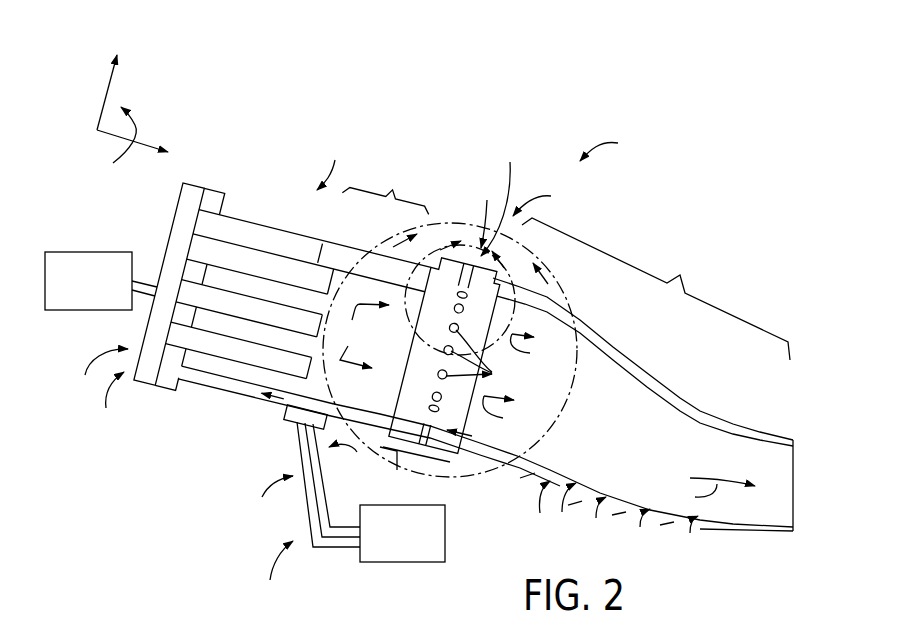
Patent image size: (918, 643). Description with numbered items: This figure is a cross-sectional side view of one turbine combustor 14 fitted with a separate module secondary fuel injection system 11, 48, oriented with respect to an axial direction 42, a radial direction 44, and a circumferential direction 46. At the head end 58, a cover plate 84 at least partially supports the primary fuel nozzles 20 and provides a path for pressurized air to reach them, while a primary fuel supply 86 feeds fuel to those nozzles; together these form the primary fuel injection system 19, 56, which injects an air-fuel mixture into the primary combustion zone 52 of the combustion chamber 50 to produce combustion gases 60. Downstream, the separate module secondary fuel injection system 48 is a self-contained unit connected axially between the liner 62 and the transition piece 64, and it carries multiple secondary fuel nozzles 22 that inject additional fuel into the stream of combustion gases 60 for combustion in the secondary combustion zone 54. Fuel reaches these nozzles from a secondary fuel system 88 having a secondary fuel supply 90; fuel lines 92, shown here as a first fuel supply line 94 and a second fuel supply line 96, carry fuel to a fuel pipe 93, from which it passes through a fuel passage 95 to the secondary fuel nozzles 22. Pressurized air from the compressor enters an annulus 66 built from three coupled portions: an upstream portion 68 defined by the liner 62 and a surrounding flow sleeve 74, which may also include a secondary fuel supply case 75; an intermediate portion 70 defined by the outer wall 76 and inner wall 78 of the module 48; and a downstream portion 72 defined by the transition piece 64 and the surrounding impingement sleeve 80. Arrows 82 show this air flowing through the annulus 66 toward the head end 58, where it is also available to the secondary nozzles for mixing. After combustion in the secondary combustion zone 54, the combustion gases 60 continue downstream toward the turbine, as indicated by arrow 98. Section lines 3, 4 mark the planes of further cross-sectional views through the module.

The section line 3- 3 is at (460, 284).
The section line 4- 4 is at (450, 342).
The separate module secondary fuel injection system 11 is at (545, 200).
The turbine combustor 14 is at (614, 147).
The primary fuel injection system 19 is at (111, 402).
The primary fuel nozzles 20 is at (228, 352).
The secondary fuel nozzles 22 is at (484, 359).
The axial direction 42 is at (112, 136).
The radial direction 44 is at (105, 93).
The circumferential direction 46 is at (136, 121).
The separate module secondary fuel injection system 48 is at (500, 196).
The combustion chamber 50 is at (485, 388).
The primary combustion zone 52 is at (405, 352).
The secondary combustion zone 54 is at (557, 402).
The primary fuel injection system 56 is at (101, 376).
The head end 58 is at (332, 159).
The combustion products 60 is at (449, 367).
The liner 62 is at (353, 398).
The transition piece 64 is at (545, 476).
The annulus 66 is at (445, 450).
The upstream portion 68 is at (312, 216).
The intermediate portion 70 is at (427, 460).
The downstream portion 72 is at (687, 284).
The flow sleeve 74 is at (355, 246).
The secondary fuel supply case 75 is at (402, 251).
The outer wall 76 is at (487, 211).
The inner wall 78 is at (447, 352).
The impingement sleeve 80 is at (598, 329).
The arrows 82 is at (609, 515).
The cover plate 84 is at (183, 204).
The primary fuel supply 86 is at (88, 252).
The secondary fuel system 88 is at (275, 574).
The secondary fuel supply 90 is at (394, 563).
The fuel lines 92 is at (310, 484).
The fuel pipe 93 is at (288, 408).
The first fuel supply line 94 is at (327, 556).
The fuel passage 95 is at (394, 475).
The second fuel supply line 96 is at (331, 497).
The arrow 98 is at (713, 493).